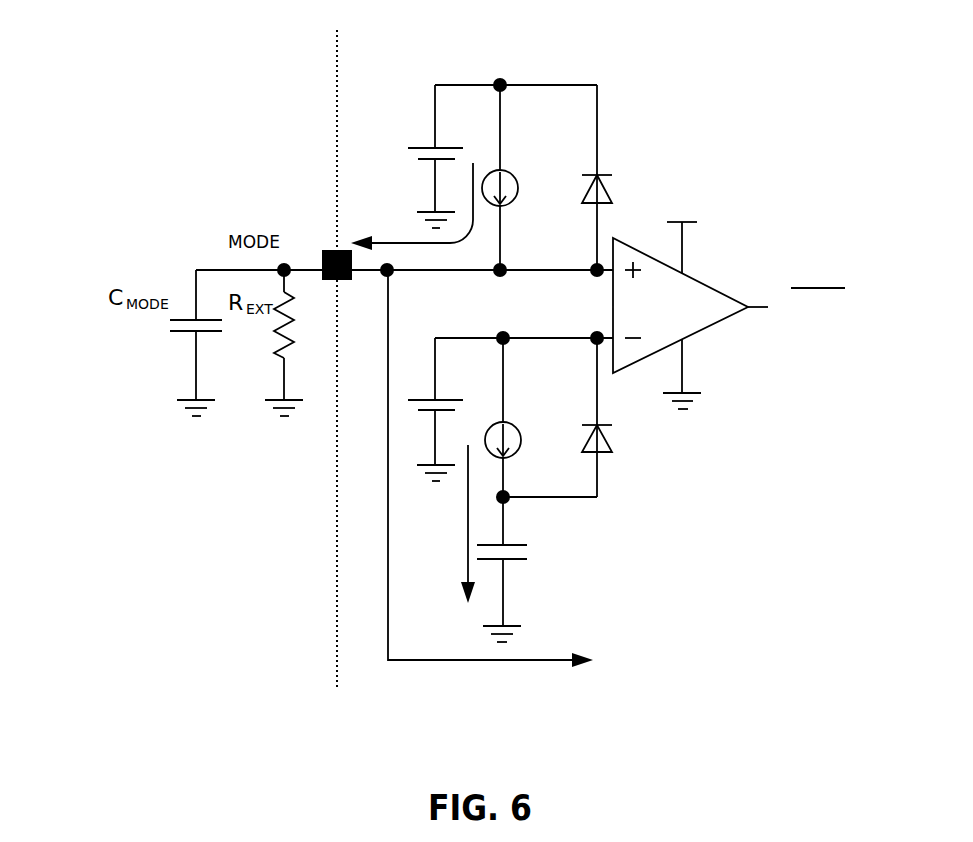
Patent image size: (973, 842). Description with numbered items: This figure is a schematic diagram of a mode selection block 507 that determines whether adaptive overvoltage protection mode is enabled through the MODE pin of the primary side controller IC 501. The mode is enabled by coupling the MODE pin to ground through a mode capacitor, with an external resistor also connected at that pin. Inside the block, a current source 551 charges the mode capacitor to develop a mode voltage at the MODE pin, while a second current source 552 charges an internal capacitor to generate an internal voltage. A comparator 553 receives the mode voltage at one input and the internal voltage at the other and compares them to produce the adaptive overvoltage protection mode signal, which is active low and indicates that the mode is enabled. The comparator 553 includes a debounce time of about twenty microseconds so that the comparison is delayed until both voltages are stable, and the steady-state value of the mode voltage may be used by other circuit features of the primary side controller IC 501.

The primary side controller IC 501 is at (337, 125).
The mode selection block 507 is at (748, 135).
The current source 551 is at (522, 178).
The current source 552 is at (522, 437).
The comparator 553 is at (690, 319).